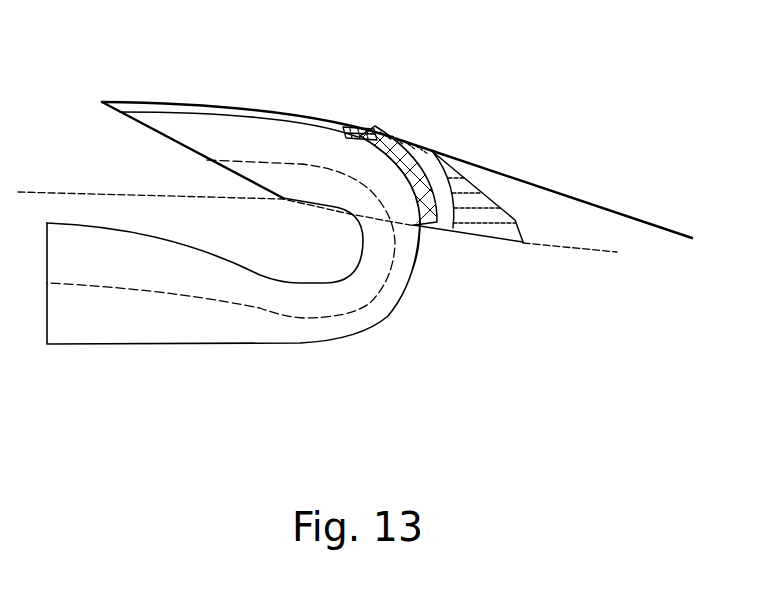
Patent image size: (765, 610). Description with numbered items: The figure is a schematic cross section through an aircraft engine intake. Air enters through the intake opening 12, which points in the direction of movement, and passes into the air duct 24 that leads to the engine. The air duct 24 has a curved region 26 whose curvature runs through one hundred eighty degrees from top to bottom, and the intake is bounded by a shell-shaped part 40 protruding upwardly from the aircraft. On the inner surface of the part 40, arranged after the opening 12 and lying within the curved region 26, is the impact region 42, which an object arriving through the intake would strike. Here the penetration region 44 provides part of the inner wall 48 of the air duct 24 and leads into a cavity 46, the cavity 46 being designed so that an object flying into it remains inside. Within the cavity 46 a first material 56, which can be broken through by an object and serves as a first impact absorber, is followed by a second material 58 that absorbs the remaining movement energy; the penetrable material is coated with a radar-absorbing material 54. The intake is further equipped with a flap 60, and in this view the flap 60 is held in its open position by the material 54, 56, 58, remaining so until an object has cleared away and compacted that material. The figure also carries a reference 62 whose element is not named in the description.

The intake opening 12 is at (163, 137).
The air duct 24 is at (308, 312).
The curved region 26 is at (376, 313).
The shell-shaped part 40 is at (236, 103).
The impact region 42 is at (342, 128).
The penetration region 44 is at (522, 102).
The cavity 46 is at (470, 217).
The inner wall 48 is at (415, 275).
The radar-absorbing material 54 is at (425, 130).
The first material 56 is at (437, 152).
The second material 58 is at (472, 202).
The flap 60 is at (413, 140).
The fastening strip 62 is at (356, 133).